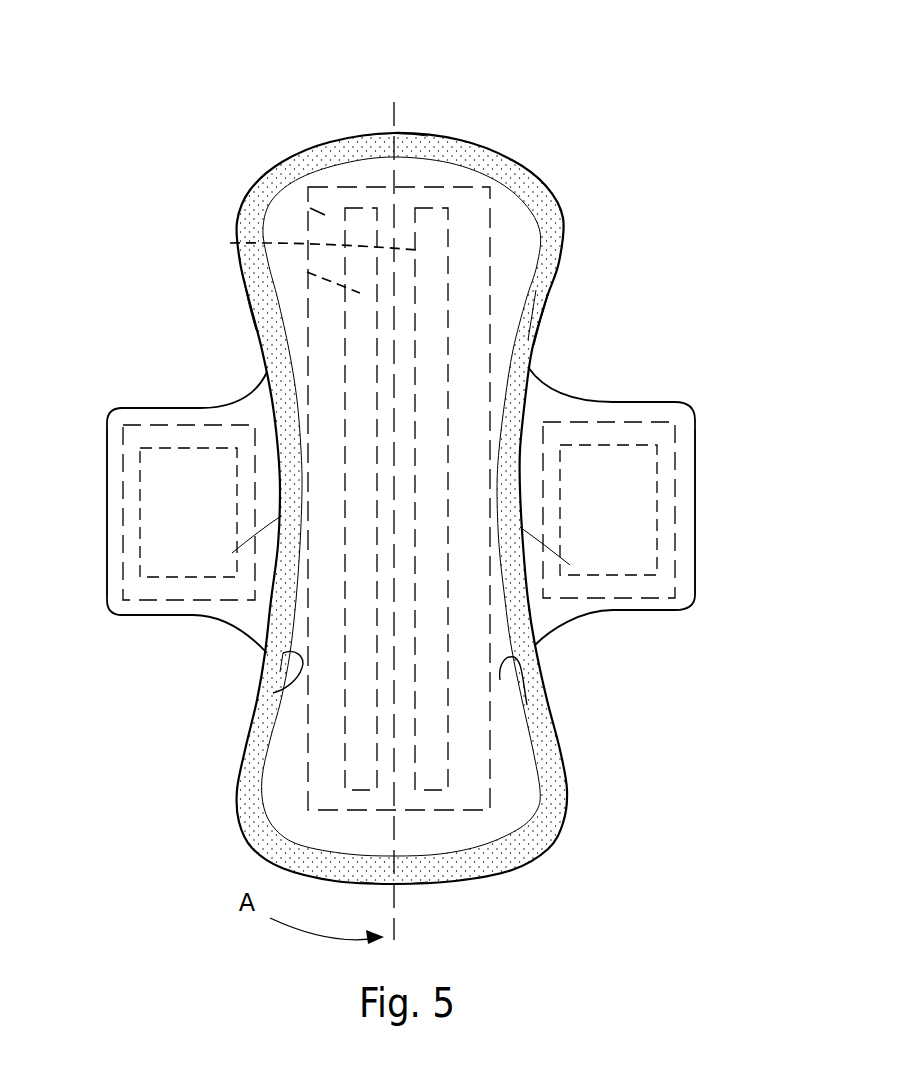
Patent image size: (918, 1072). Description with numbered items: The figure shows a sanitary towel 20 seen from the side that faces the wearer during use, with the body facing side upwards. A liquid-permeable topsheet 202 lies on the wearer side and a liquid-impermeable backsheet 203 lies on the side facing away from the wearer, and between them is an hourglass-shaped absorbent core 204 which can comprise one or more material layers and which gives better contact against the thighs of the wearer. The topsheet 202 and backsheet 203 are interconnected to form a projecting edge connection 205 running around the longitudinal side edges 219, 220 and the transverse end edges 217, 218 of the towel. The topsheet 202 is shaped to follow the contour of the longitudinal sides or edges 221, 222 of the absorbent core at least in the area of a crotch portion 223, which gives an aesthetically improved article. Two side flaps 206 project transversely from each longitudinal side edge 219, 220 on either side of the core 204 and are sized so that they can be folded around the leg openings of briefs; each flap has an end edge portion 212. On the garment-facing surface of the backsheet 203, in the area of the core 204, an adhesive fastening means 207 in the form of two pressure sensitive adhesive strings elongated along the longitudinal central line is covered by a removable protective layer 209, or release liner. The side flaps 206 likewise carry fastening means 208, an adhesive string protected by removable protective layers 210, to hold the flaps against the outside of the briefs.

The sanitary towel 20 is at (602, 116).
The liquid-permeable topsheet 202 is at (517, 223).
The liquid-impermeable backsheet 203 is at (547, 242).
The absorbent core 204 is at (533, 270).
The projecting edge connection 205 is at (537, 298).
The side flaps 206 is at (213, 418).
The adhesive fastening means 207 is at (302, 268).
The fastening means 208 is at (168, 576).
The removable protective layer 209 is at (305, 208).
The removable protective layers 210 is at (143, 423).
The end edge portion 212 is at (105, 593).
The transverse end edge 217 is at (413, 133).
The transverse end edge 218 is at (427, 882).
The longitudinal side edge 219 is at (543, 313).
The longitudinal side edge 220 is at (250, 300).
The longitudinal side or edge of the absorbent core 221 is at (508, 700).
The longitudinal side or edge of the absorbent core 222 is at (263, 699).
The crotch portion 223 is at (282, 515).